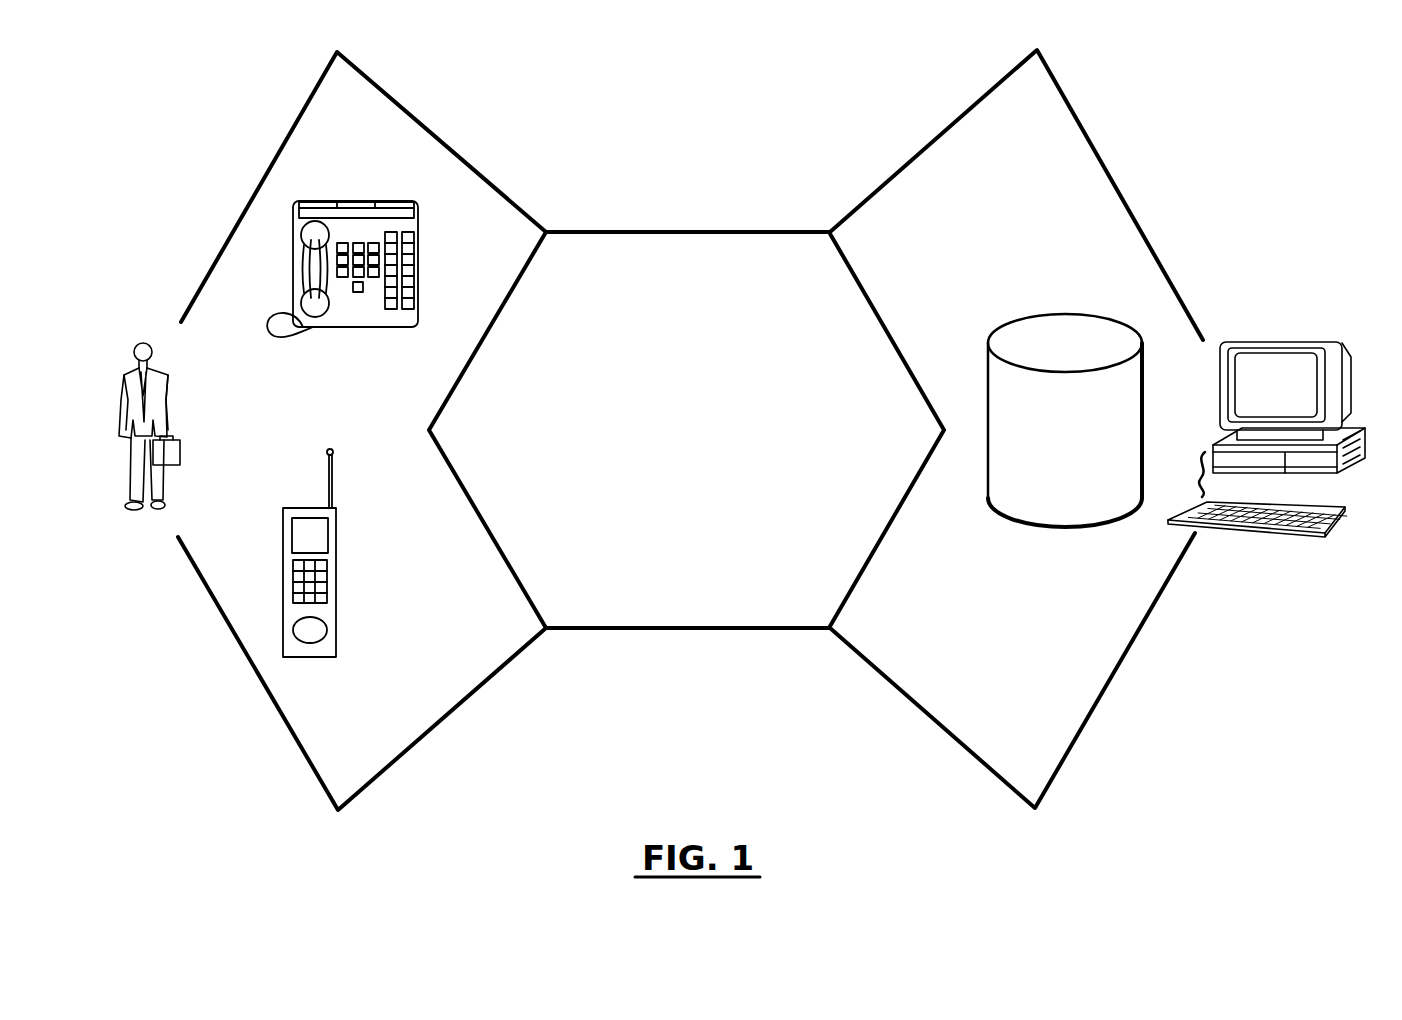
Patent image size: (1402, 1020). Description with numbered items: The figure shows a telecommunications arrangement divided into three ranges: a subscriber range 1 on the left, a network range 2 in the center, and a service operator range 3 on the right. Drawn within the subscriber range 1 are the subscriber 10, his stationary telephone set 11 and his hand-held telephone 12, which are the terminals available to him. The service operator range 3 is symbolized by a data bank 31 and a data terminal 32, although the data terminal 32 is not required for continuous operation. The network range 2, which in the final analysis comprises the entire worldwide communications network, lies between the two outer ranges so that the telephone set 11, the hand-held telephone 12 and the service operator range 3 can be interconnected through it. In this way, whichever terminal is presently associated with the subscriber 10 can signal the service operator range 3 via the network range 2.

The subscriber range 1 is at (287, 167).
The network range 2 is at (685, 257).
The service operator range 3 is at (1072, 168).
The subscriber 10 is at (168, 398).
The stationary telephone set 11 is at (415, 225).
The hand-held telephone 12 is at (335, 563).
The data bank 31 is at (1022, 510).
The data terminal 32 is at (1253, 343).